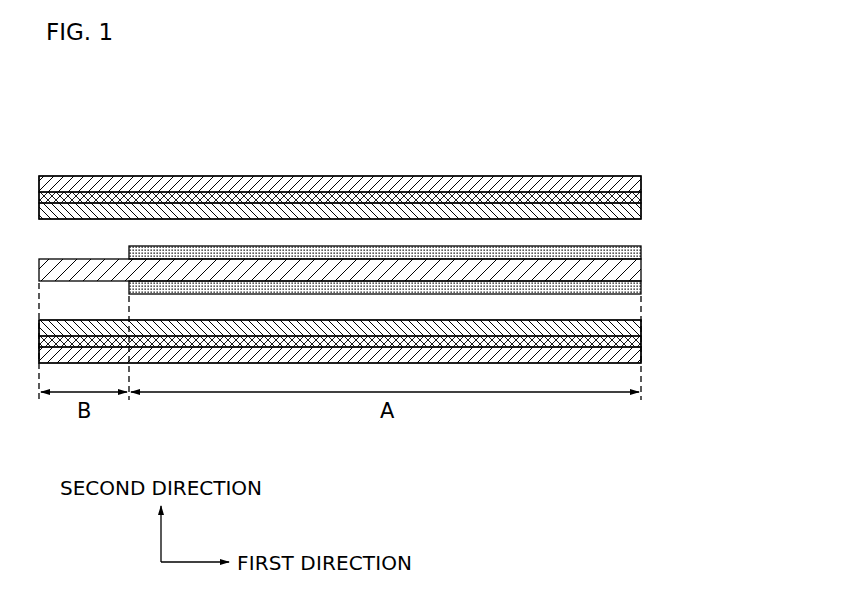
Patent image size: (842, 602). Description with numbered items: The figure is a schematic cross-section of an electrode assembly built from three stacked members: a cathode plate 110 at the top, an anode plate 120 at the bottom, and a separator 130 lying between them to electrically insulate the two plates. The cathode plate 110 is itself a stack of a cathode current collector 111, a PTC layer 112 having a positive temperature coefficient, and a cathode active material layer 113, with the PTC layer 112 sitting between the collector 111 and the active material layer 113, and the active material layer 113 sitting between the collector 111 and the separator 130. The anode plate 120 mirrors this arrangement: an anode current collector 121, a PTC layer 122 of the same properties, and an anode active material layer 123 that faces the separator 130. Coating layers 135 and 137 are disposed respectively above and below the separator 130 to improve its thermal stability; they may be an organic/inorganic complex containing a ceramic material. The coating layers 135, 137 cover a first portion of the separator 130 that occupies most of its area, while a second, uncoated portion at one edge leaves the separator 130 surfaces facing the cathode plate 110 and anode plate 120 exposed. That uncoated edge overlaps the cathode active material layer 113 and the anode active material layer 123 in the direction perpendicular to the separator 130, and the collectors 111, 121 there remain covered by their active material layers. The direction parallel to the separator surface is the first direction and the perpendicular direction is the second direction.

The cathode plate 110 is at (412, 182).
The cathode current collector 111 is at (641, 183).
The PTC layer 112 is at (641, 197).
The cathode active material layer 113 is at (641, 210).
The anode plate 120 is at (412, 368).
The anode current collector 121 is at (641, 358).
The PTC layer 122 is at (641, 342).
The anode active material layer 123 is at (641, 328).
The separator 130 is at (641, 270).
The coating layer 135 is at (641, 252).
The coating layer 137 is at (641, 288).